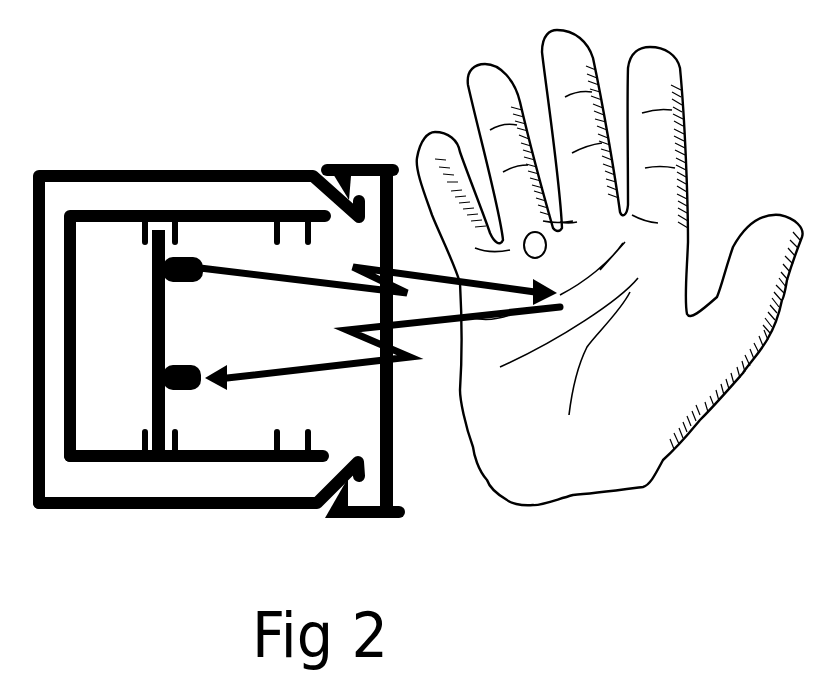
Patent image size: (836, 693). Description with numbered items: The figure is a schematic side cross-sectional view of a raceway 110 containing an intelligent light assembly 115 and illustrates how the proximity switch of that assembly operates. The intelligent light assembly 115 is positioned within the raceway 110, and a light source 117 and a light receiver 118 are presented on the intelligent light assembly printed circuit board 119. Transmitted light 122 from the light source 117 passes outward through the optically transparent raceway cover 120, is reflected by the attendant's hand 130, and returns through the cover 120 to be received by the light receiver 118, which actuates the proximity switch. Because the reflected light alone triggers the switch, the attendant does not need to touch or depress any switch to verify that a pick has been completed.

The raceway 110 is at (178, 170).
The intelligent light assembly 115 is at (113, 462).
The light source 117 is at (183, 258).
The light receiver 118 is at (183, 390).
The printed circuit board 119 is at (153, 277).
The optically transparent raceway cover 120 is at (393, 417).
The transmitted light 122 is at (200, 370).
The attendant's hand 130 is at (670, 462).